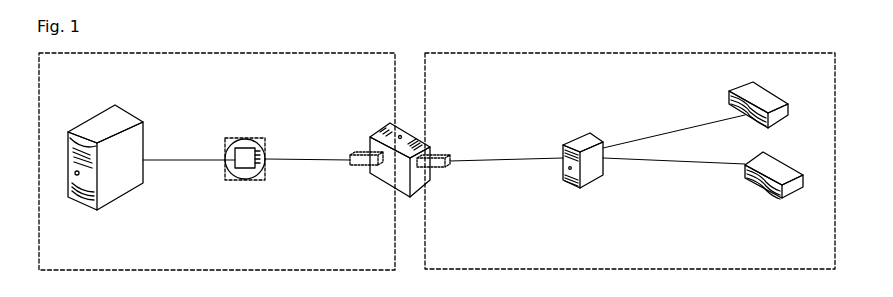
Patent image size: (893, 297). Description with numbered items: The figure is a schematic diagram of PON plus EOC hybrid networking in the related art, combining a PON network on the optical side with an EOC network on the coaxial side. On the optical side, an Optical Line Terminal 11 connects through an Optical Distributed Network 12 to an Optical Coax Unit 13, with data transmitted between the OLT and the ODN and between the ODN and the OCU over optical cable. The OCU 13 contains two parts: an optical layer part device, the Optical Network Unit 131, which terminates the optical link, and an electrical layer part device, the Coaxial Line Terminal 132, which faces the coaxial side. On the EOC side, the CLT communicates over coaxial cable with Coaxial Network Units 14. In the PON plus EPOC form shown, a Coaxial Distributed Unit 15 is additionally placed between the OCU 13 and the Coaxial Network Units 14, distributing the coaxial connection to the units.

The optical line terminal 11 is at (131, 120).
The optical distributed network 12 is at (242, 138).
The optical coax unit 13 is at (397, 125).
The optical network unit 131 is at (365, 165).
The coaxial line terminal 132 is at (427, 167).
The coaxial network unit 14 is at (730, 232).
The coaxial distributed unit 15 is at (573, 142).